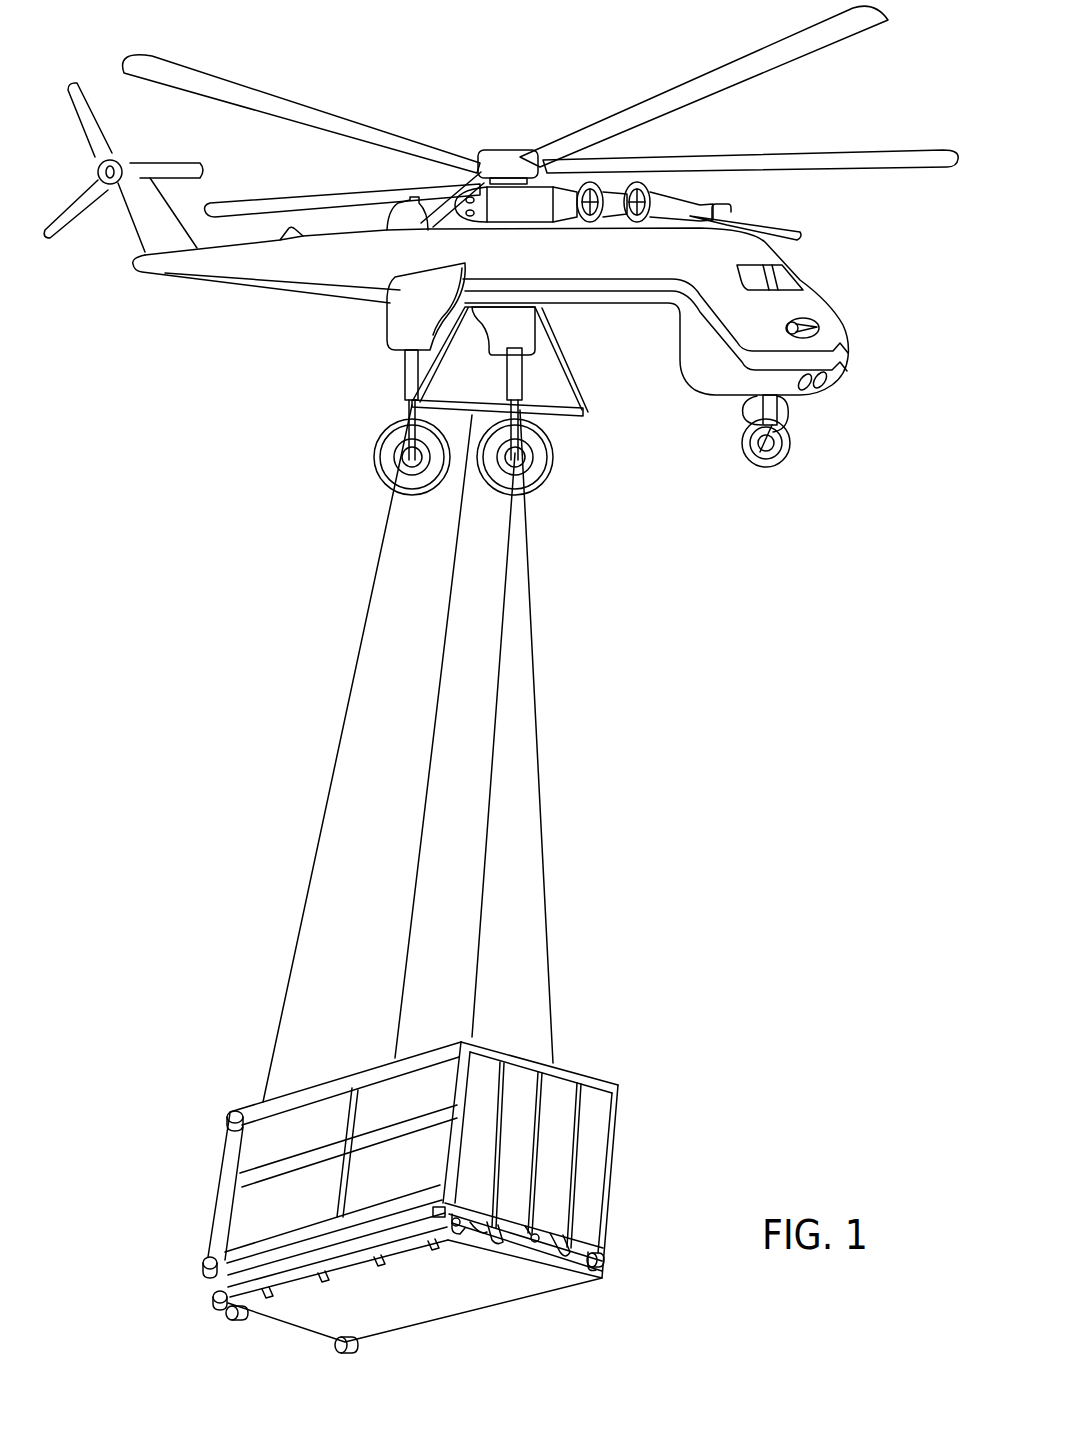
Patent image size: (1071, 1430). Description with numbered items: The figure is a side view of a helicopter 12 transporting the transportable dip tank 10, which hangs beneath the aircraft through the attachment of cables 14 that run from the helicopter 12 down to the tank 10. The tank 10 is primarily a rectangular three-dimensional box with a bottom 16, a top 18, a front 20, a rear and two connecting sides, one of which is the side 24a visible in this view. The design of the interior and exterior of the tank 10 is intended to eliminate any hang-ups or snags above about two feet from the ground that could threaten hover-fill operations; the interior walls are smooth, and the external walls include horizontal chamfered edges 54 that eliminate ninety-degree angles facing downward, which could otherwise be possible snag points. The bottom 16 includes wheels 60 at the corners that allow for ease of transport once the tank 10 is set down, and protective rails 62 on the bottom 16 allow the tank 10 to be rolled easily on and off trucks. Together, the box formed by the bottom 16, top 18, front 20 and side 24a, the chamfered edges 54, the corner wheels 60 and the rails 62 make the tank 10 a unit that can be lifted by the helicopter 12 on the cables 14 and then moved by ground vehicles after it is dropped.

The transportable dip tank 10 is at (434, 1198).
The helicopter 12 is at (832, 292).
The cables 14 is at (538, 763).
The bottom 16 is at (543, 1283).
The top 18 is at (355, 1075).
The front 20 is at (598, 1192).
The connecting side 24a is at (304, 1145).
The horizontal chamfered edges 54 is at (227, 1118).
The wheels 60 is at (604, 1259).
The protective rails 62 is at (285, 1293).